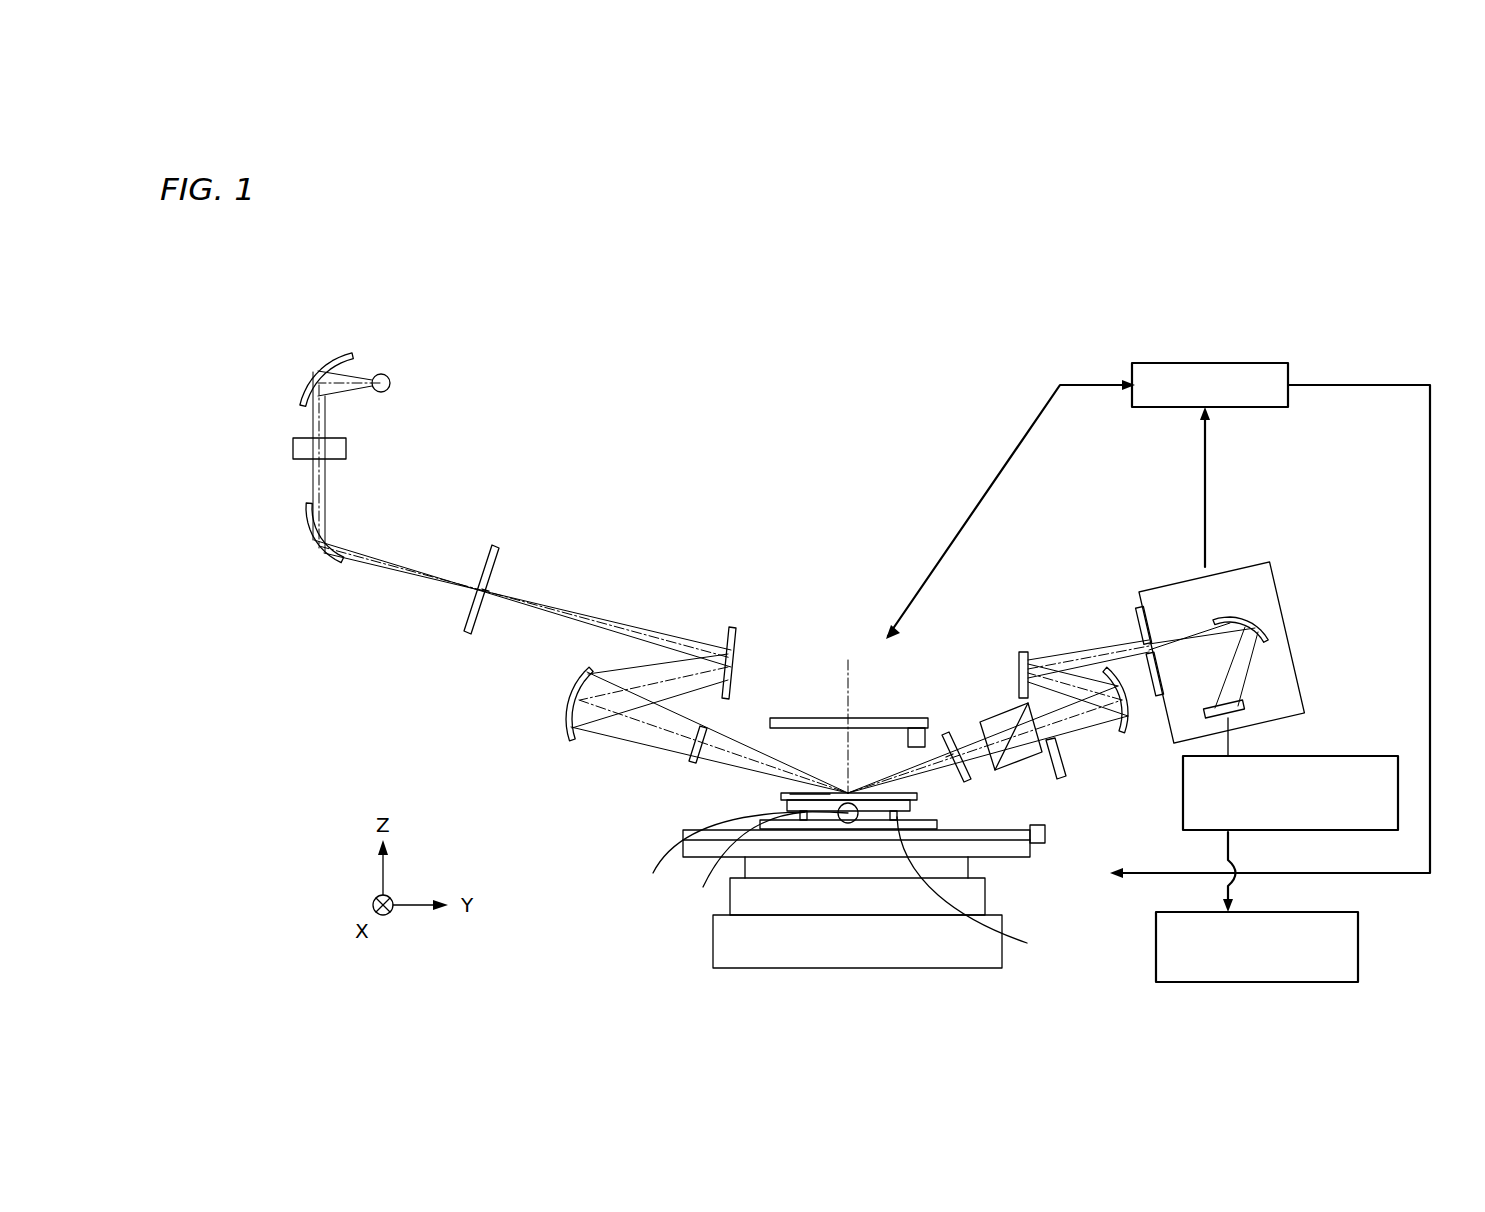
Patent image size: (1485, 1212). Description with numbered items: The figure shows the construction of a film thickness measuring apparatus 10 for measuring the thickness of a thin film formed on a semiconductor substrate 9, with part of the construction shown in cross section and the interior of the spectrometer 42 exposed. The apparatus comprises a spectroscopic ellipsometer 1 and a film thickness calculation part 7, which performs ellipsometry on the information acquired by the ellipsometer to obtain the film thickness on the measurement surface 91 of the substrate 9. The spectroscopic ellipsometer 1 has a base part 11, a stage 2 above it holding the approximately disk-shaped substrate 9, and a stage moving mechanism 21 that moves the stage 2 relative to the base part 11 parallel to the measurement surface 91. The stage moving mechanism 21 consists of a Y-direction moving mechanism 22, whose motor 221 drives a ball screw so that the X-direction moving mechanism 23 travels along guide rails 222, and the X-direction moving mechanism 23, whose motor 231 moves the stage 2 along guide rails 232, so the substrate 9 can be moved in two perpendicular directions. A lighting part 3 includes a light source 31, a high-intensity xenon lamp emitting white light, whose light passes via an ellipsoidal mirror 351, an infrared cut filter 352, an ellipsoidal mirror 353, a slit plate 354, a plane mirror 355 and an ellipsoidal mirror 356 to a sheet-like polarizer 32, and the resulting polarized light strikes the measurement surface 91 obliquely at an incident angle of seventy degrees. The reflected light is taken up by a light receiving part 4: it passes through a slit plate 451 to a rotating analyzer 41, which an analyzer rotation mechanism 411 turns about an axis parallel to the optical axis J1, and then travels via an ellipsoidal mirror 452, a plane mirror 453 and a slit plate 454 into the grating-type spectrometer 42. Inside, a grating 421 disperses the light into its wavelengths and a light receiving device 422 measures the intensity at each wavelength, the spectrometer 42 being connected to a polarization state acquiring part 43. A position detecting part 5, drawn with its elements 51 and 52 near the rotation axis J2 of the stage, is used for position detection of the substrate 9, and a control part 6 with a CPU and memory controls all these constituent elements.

The spectroscopic ellipsometer 1 is at (745, 470).
The film thickness measuring apparatus 10 is at (293, 310).
The base part 11 is at (713, 937).
The stage 2 is at (788, 805).
The stage moving mechanism 21 is at (1080, 890).
The Y-direction moving mechanism 22 is at (1062, 845).
The motor 221 is at (1040, 845).
The guide rails 222 is at (978, 838).
The X-direction moving mechanism 23 is at (738, 808).
The motor 231 is at (743, 863).
The guide rails 232 is at (1036, 945).
The lighting part 3 is at (478, 500).
The light source 31 is at (392, 372).
The polarizer 32 is at (705, 728).
The ellipsoidal mirror 351 is at (327, 366).
The infrared cut filter 352 is at (338, 437).
The ellipsoidal mirror 353 is at (327, 560).
The slit plate 354 is at (463, 620).
The plane mirror 355 is at (738, 668).
The ellipsoidal mirror 356 is at (572, 683).
The light receiving part 4 is at (1247, 540).
The analyzer 41 is at (1026, 766).
The analyzer rotation mechanism 411 is at (1063, 758).
The spectrometer 42 is at (1282, 580).
The grating 421 is at (1266, 630).
The light receiving device 422 is at (1240, 715).
The polarization state acquiring part 43 is at (1258, 832).
The slit plate 451 is at (950, 730).
The ellipsoidal mirror 452 is at (1128, 737).
The plane mirror 453 is at (1023, 652).
The slit plate 454 is at (1138, 612).
The position detecting part 5 is at (928, 632).
The imaging element 51 is at (918, 735).
The optical system 52 is at (858, 722).
The control part 6 is at (1183, 363).
The film thickness calculation part 7 is at (1360, 937).
The substrate 9 is at (842, 792).
The measurement surface 91 is at (791, 791).
The optical axis J1 is at (944, 772).
The rotation axis J2 is at (849, 672).